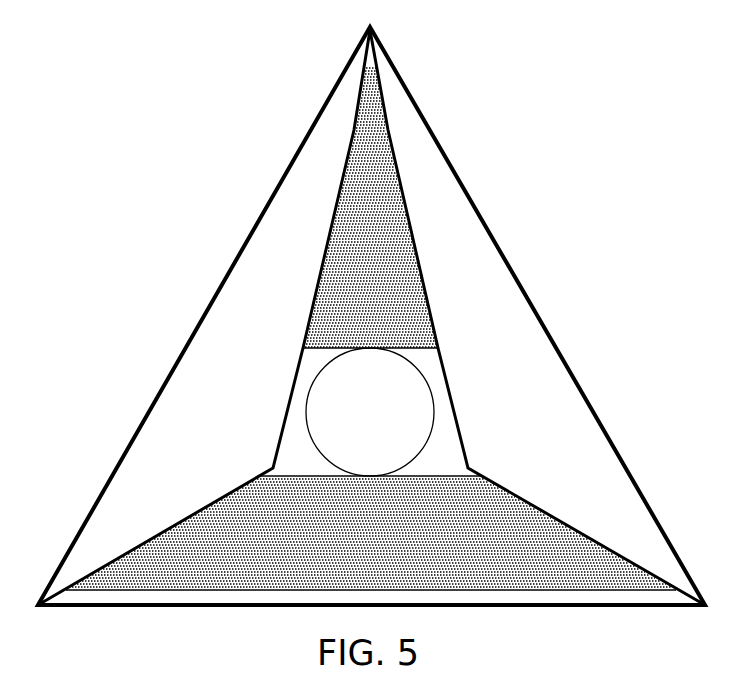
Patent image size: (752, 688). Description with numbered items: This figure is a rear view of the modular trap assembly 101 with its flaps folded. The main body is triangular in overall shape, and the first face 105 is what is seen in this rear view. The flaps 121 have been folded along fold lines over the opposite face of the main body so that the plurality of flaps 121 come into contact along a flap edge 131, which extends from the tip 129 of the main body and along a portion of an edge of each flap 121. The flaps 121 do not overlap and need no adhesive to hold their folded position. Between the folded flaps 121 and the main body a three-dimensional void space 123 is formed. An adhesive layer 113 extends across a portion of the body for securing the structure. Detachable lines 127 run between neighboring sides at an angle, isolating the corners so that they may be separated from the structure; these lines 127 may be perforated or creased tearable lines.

The modular trap assembly 101 is at (574, 72).
The first face 105 is at (148, 484).
The adhesive layer 113 is at (386, 302).
The first flap 121 is at (236, 432).
The void space 123 is at (283, 525).
The detachable lines 127 is at (197, 325).
The tip 129 is at (370, 27).
The flap edge 131 is at (378, 55).